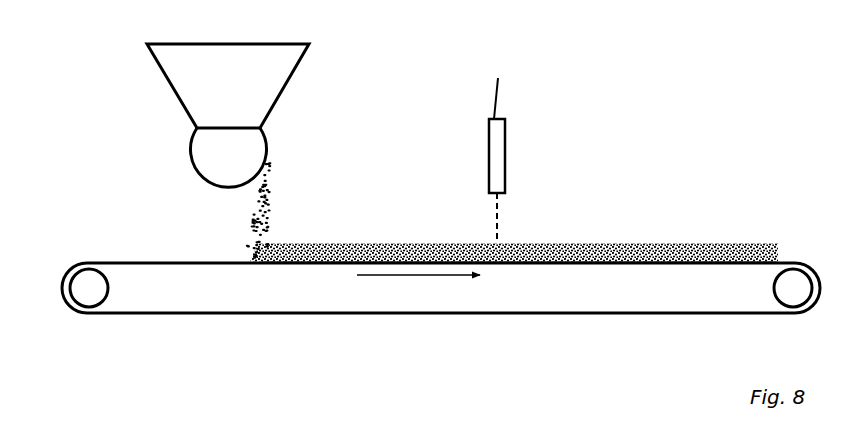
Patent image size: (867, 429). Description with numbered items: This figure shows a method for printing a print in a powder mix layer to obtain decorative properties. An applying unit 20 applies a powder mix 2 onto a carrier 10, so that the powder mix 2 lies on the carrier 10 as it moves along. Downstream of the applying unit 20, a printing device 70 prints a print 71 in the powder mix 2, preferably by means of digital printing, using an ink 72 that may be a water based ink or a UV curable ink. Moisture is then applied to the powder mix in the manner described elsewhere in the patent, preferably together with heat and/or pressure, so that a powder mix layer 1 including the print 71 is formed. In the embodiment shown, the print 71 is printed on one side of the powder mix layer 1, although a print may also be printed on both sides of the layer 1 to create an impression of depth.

The powder mix layer 1 is at (535, 265).
The powder mix 2 is at (270, 200).
The carrier 10 is at (158, 263).
The applying unit 20 is at (175, 128).
The printing device 70 is at (520, 167).
The print 71 is at (652, 230).
The ink 72 is at (498, 212).